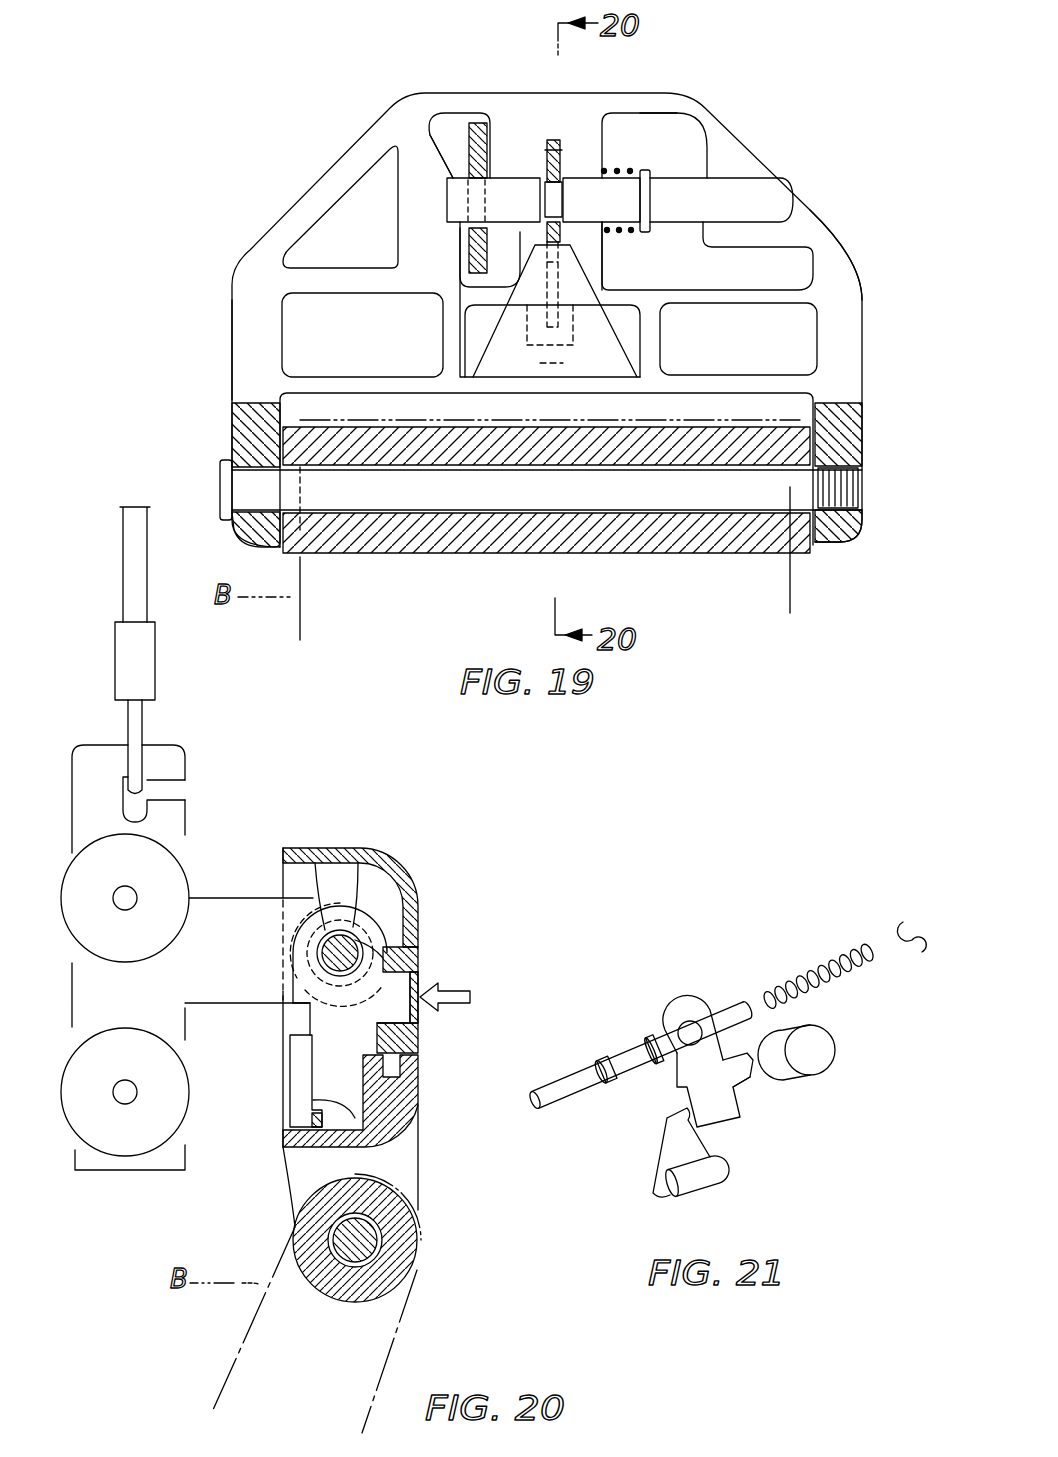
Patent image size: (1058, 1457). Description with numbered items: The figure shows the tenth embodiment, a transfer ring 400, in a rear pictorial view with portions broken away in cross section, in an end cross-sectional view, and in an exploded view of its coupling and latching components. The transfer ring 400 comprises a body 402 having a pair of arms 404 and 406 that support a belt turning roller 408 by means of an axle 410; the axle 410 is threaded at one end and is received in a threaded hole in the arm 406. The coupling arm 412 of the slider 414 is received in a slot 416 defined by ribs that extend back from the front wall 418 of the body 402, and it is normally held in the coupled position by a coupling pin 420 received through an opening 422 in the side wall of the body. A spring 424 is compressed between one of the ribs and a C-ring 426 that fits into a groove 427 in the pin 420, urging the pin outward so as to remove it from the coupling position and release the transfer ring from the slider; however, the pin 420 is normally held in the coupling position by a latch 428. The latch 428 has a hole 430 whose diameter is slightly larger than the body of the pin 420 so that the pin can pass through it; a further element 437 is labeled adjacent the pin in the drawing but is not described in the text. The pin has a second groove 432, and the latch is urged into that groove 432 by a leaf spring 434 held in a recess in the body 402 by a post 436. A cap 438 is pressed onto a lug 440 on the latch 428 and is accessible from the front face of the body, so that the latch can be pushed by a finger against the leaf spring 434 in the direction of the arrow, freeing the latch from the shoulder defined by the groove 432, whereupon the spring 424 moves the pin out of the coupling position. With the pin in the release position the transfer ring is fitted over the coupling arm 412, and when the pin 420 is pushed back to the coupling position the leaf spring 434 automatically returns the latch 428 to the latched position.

In FIG. 19, the transfer ring 400 is at (745, 110).
In FIG. 20, the transfer ring 400 is at (403, 862).
In FIG. 19, the body 402 is at (257, 262).
In FIG. 19, the arm 404 is at (243, 428).
In FIG. 20, the arm 404 is at (397, 1150).
In FIG. 19, the arm 406 is at (865, 416).
In FIG. 19, the belt turning roller 408 is at (540, 543).
In FIG. 20, the belt turning roller 408 is at (403, 1227).
In FIG. 19, the axle 410 is at (608, 493).
In FIG. 20, the axle 410 is at (385, 1245).
In FIG. 19, the coupling arm 412 is at (478, 125).
In FIG. 20, the coupling arm 412 is at (226, 915).
In FIG. 20, the slider 414 is at (87, 993).
In FIG. 19, the slot 416 is at (443, 140).
In FIG. 20, the front wall 418 is at (418, 925).
In FIG. 19, the coupling pin 420 is at (733, 187).
In FIG. 20, the coupling pin 420 is at (333, 935).
In FIG. 21, the coupling pin 420 is at (548, 1090).
In FIG. 19, the opening 422 is at (812, 217).
In FIG. 19, the spring 424 is at (617, 168).
In FIG. 21, the spring 424 is at (820, 963).
In FIG. 19, the C-ring 426 is at (657, 153).
In FIG. 21, the C-ring 426 is at (907, 918).
In FIG. 19, the groove 427 is at (653, 182).
In FIG. 21, the groove 427 is at (652, 1040).
In FIG. 19, the latch 428 is at (552, 140).
In FIG. 20, the latch 428 is at (413, 1088).
In FIG. 21, the latch 428 is at (703, 1003).
In FIG. 19, the hole 430 is at (547, 172).
In FIG. 20, the hole 430 is at (367, 935).
In FIG. 21, the hole 430 is at (680, 1012).
In FIG. 21, the groove 432 is at (603, 1065).
In FIG. 19, the leaf spring 434 is at (578, 285).
In FIG. 20, the leaf spring 434 is at (283, 1070).
In FIG. 21, the leaf spring 434 is at (663, 1153).
In FIG. 19, the post 436 is at (563, 363).
In FIG. 20, the post 436 is at (285, 1118).
In FIG. 19, the ring 437 is at (571, 160).
In FIG. 20, the ring 437 is at (352, 925).
In FIG. 20, the cap 438 is at (420, 1017).
In FIG. 21, the cap 438 is at (832, 1053).
In FIG. 20, the lug 440 is at (418, 1045).
In FIG. 21, the lug 440 is at (750, 1080).